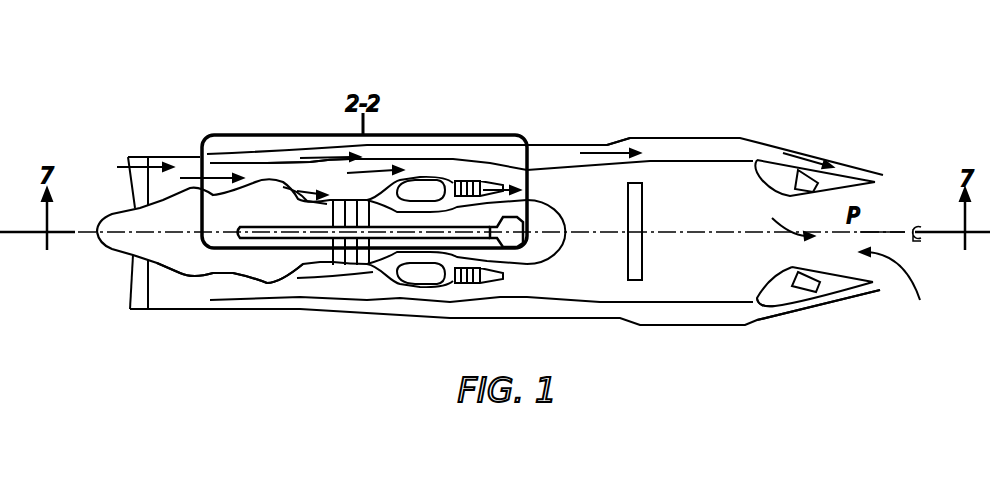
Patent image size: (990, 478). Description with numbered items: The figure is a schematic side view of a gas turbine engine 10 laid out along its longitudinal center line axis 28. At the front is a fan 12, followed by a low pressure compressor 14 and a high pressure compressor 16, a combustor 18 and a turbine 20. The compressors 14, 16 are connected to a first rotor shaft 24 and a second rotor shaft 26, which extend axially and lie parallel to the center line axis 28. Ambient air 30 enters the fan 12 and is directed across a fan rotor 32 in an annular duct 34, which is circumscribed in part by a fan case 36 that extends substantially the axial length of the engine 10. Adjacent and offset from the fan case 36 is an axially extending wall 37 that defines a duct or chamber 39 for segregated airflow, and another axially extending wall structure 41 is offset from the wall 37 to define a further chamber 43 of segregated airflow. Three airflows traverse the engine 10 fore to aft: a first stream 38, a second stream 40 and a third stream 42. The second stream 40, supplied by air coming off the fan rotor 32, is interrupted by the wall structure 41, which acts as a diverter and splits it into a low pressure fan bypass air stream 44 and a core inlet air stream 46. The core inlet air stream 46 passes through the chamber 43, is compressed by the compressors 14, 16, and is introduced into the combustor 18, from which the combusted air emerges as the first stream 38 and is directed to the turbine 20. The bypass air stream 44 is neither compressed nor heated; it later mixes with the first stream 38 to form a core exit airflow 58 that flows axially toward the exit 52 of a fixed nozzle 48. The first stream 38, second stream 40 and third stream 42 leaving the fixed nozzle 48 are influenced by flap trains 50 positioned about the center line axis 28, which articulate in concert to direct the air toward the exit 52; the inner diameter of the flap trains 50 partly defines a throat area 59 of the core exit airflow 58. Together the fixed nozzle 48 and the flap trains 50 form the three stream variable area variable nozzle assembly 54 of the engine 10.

The gas turbine engine 10 is at (847, 85).
The fan 12 is at (118, 268).
The low pressure compressor 14 is at (190, 267).
The high pressure compressor 16 is at (265, 272).
The combustor 18 is at (407, 275).
The turbine 20 is at (637, 183).
The first rotor shaft 24 is at (382, 236).
The second rotor shaft 26 is at (521, 247).
The longitudinal center line axis 28 is at (887, 230).
The ambient air 30 is at (141, 165).
The fan rotor 32 is at (135, 303).
The annular duct 34 is at (163, 292).
The fan case 36 is at (217, 310).
The axially extending wall 37 is at (727, 161).
The first stream 38 is at (497, 180).
The duct or chamber 39 is at (693, 145).
The second stream 40 is at (215, 178).
The wall structure 41 is at (330, 160).
The third stream 42 is at (347, 157).
The chamber 43 is at (390, 192).
The low pressure fan bypass air stream 44 is at (388, 168).
The core inlet air stream 46 is at (290, 190).
The fixed nozzle 48 is at (866, 172).
The flap trains 50 is at (821, 300).
The exit 52 is at (882, 292).
The three stream variable area variable nozzle assembly 54 is at (894, 274).
The core exit airflow 58 is at (781, 218).
The throat area 59 is at (792, 253).